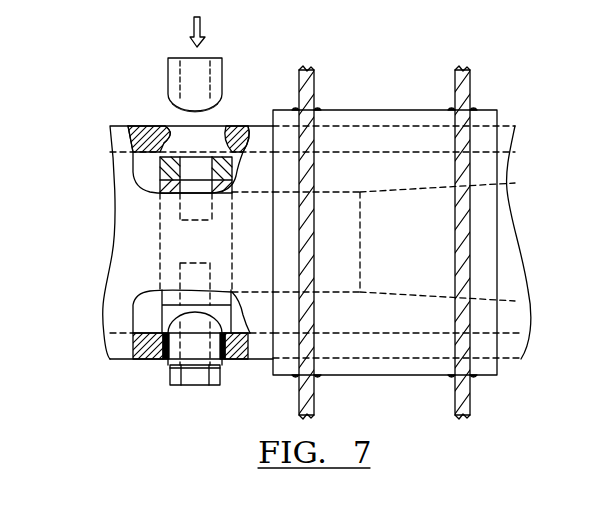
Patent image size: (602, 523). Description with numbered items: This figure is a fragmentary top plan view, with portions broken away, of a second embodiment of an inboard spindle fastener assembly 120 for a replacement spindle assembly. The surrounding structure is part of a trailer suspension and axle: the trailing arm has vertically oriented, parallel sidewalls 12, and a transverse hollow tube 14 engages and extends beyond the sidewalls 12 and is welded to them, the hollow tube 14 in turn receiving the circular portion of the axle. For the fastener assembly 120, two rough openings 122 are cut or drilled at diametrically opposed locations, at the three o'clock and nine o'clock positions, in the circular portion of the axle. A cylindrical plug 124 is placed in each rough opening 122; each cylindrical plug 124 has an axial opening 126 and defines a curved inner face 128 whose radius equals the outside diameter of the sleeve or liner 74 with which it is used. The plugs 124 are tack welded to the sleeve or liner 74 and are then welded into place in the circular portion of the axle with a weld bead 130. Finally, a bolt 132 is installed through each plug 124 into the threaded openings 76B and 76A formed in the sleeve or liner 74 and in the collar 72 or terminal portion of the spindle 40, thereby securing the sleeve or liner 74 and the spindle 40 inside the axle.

The sidewalls 12 is at (455, 386).
The transverse hollow tube 14 is at (377, 117).
The spindle 40 is at (510, 281).
The collar 72 is at (160, 186).
The sleeve or liner 74 is at (185, 160).
The threaded opening 76A is at (186, 222).
The threaded opening 76B is at (186, 157).
The inboard spindle fastener assembly 120 is at (498, 66).
The rough opening 122 is at (170, 125).
The cylindrical plug 124 is at (170, 72).
The axial opening 126 is at (180, 88).
The curved inner face 128 is at (218, 107).
The weld bead 130 is at (146, 357).
The bolt 132 is at (193, 388).